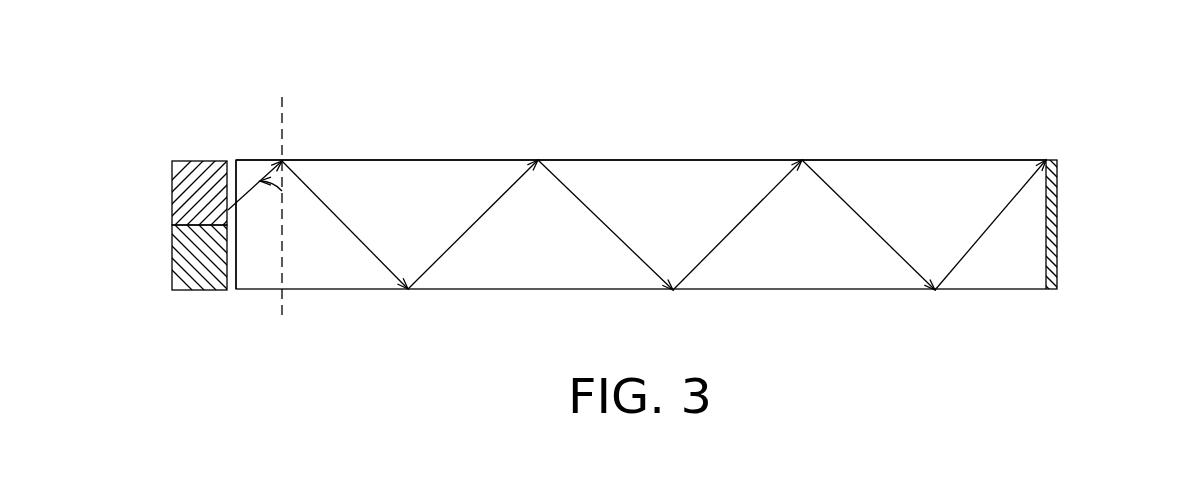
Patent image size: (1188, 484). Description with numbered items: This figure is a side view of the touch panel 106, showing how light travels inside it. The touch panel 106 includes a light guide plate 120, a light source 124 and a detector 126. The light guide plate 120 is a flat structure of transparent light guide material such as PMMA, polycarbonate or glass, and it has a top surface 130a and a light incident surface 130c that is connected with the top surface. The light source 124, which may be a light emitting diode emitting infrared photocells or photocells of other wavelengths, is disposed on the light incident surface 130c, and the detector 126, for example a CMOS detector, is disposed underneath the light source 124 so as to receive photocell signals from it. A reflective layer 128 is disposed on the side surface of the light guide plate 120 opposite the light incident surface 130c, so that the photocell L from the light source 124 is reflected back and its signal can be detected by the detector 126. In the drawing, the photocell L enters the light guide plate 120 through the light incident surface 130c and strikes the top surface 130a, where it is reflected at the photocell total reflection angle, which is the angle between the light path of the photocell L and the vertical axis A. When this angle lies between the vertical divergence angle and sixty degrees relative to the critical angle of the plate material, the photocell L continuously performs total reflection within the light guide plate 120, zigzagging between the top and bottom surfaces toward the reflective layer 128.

The touch panel 106 is at (1139, 359).
The light guide plate 120 is at (930, 185).
The light source 124 is at (188, 200).
The detector 126 is at (188, 257).
The reflective layer 128 is at (1057, 210).
The top surface 130a is at (360, 158).
The light incident surface 130c is at (235, 183).
The photocell L is at (358, 240).
The vertical axis A is at (282, 194).